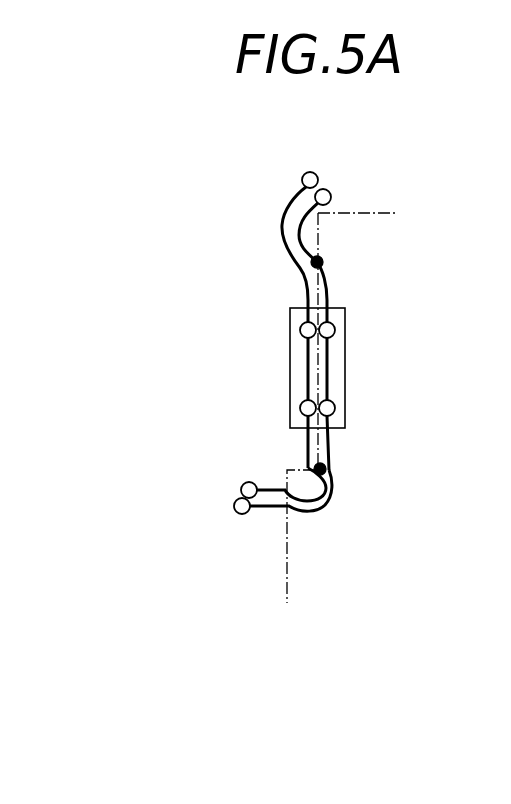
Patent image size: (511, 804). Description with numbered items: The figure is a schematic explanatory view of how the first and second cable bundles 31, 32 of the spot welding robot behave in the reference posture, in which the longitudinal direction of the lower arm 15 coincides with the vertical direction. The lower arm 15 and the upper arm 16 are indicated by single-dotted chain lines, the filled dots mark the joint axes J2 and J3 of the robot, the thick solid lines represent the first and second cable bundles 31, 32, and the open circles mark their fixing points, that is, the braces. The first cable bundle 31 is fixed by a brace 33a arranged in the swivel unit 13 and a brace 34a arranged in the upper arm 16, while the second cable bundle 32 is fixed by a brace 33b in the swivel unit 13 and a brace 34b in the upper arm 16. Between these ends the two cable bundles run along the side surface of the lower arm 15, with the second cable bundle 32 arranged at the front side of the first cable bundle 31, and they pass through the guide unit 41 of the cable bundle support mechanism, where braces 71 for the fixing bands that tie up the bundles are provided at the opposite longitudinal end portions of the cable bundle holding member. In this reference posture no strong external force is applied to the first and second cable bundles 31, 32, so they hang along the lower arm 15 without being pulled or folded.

The swivel unit 13 is at (300, 462).
The lower arm 15 is at (318, 375).
The upper arm 16 is at (377, 211).
The first cable bundle 31 is at (303, 295).
The second cable bundle 32 is at (330, 298).
The brace 33a is at (241, 490).
The brace 33b is at (238, 513).
The brace 34a is at (311, 178).
The brace 34b is at (329, 191).
The guide unit 41 is at (346, 418).
The braces 71 is at (300, 331).
The joint axis J2 is at (324, 472).
The joint axis J3 is at (323, 258).